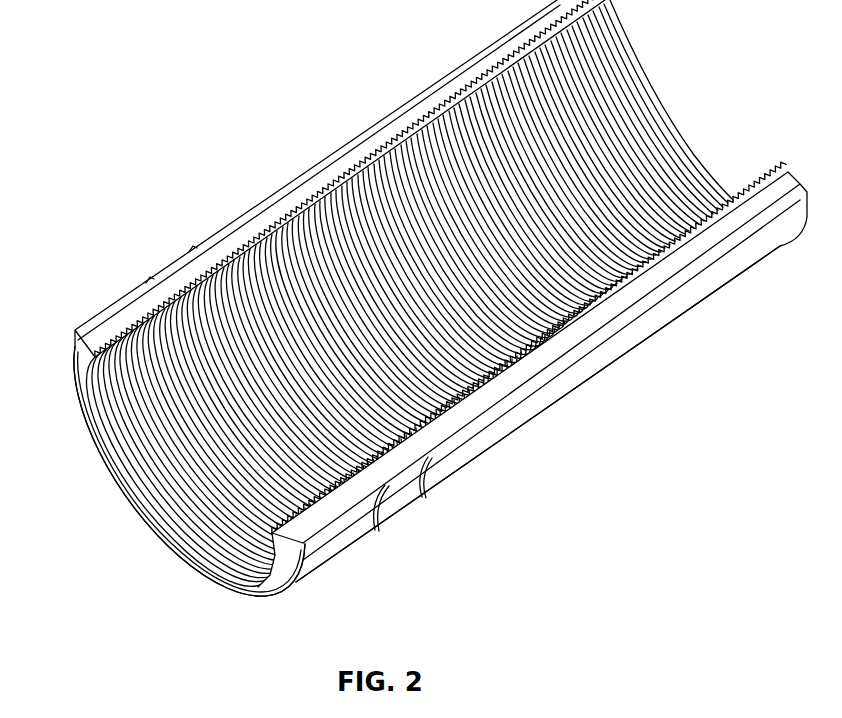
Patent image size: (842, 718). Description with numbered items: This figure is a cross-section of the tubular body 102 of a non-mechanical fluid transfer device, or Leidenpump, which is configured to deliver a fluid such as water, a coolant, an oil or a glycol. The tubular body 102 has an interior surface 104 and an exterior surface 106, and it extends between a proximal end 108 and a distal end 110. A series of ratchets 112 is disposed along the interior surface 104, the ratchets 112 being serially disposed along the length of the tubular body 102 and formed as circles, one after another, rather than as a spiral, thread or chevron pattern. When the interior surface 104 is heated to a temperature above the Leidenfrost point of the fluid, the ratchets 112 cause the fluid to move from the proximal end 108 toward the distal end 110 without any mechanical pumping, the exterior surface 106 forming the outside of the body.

The tubular body 102 is at (100, 224).
The interior surface 104 is at (758, 176).
The exterior surface 106 is at (608, 360).
The proximal end 108 is at (652, 100).
The distal end 110 is at (118, 488).
The ratchets 112 is at (120, 333).